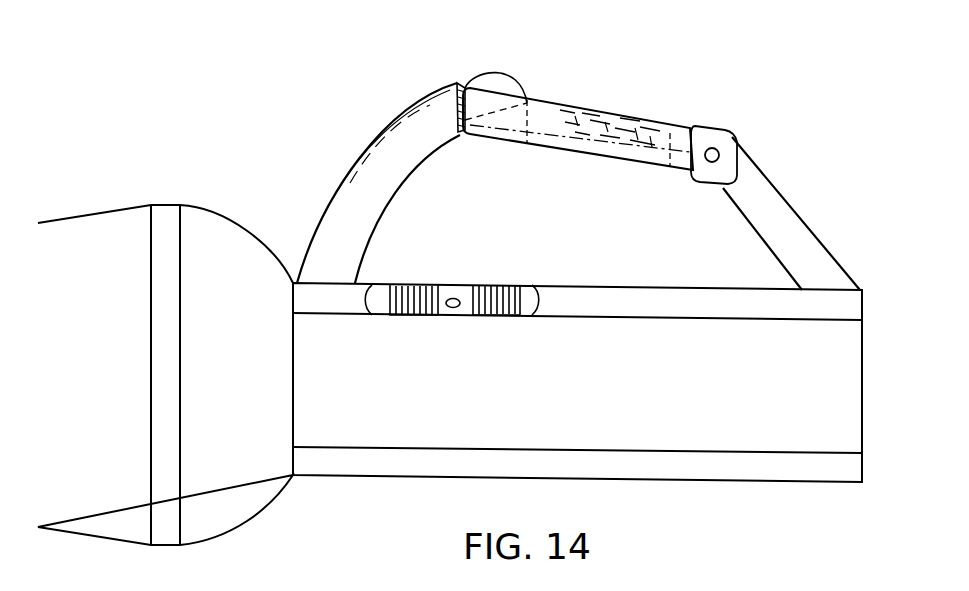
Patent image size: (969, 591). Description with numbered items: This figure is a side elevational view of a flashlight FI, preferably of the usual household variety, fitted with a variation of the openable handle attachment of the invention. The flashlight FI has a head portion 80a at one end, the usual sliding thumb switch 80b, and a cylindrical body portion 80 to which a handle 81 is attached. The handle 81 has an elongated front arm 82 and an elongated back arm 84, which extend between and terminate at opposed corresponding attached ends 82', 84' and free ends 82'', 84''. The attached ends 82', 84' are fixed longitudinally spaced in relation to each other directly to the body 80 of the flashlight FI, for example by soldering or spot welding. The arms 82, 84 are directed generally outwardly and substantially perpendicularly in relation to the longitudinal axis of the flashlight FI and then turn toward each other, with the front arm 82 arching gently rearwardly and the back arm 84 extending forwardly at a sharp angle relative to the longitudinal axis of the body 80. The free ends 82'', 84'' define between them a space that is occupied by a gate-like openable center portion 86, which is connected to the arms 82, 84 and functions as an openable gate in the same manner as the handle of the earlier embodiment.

The flashlight FI is at (226, 190).
The cylindrical body portion 80 is at (617, 305).
The head portion 80a is at (222, 505).
The sliding thumb switch 80b is at (435, 283).
The handle 81 is at (670, 73).
The front arm 82 is at (400, 158).
The attached end of front arm 82' is at (399, 233).
The free end of front arm 82'' is at (478, 83).
The back arm 84 is at (793, 184).
The attached end of back arm 84' is at (865, 249).
The free end of back arm 84'' is at (793, 118).
The gate-like openable center portion 86 is at (547, 118).